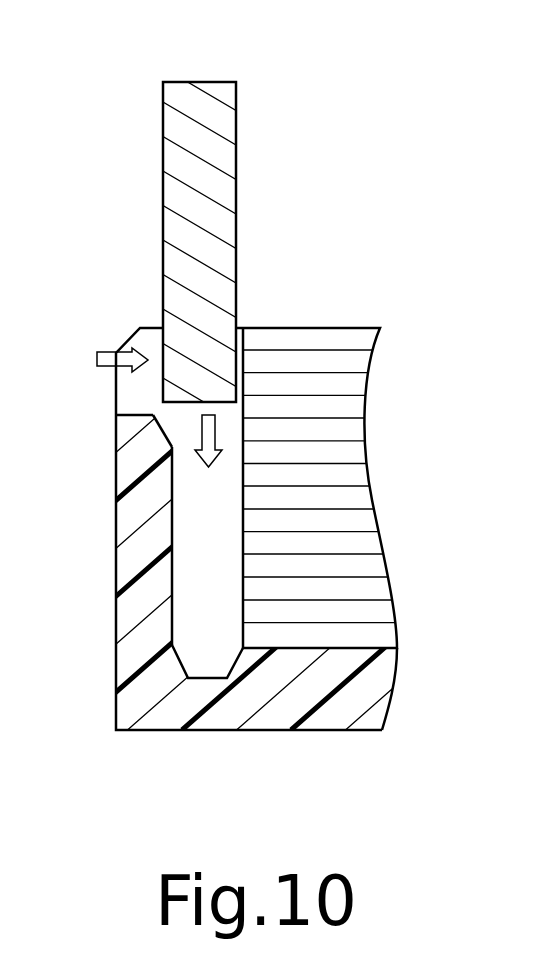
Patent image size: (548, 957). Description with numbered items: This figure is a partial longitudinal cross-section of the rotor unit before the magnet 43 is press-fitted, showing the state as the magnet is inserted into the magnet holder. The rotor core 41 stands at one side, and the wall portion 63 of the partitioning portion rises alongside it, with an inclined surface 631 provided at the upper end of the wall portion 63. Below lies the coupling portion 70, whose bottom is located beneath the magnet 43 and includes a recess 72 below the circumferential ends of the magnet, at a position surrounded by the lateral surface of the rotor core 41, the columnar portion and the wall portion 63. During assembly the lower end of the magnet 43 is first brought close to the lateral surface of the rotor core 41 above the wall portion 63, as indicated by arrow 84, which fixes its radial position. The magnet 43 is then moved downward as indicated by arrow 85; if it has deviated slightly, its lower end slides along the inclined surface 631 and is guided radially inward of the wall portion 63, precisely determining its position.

The magnet 43 is at (195, 166).
The rotor core 41 is at (317, 360).
The arrow 84 is at (108, 356).
The inclined surface 631 is at (160, 434).
The arrow 85 is at (210, 443).
The wall portion 63 is at (137, 550).
The recess 72 is at (208, 660).
The coupling portion 70 is at (272, 710).